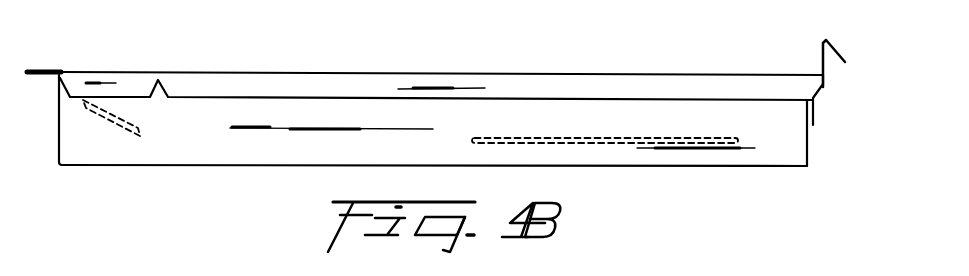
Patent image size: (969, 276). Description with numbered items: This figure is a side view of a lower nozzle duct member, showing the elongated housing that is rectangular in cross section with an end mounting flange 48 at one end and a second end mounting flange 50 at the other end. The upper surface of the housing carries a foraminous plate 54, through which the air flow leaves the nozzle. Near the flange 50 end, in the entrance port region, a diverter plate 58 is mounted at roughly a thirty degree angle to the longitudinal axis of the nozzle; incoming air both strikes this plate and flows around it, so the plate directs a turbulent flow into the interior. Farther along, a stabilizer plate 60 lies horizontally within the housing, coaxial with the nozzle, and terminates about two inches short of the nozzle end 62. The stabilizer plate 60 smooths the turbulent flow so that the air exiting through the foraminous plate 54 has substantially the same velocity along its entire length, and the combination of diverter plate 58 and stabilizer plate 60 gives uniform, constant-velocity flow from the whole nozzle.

The end mounting flange 48 is at (837, 45).
The end mounting flange 50 is at (43, 68).
The foraminous plate 54 is at (387, 82).
The diverter plate 58 is at (116, 113).
The stabilizer plate 60 is at (612, 138).
The end 62 is at (808, 138).